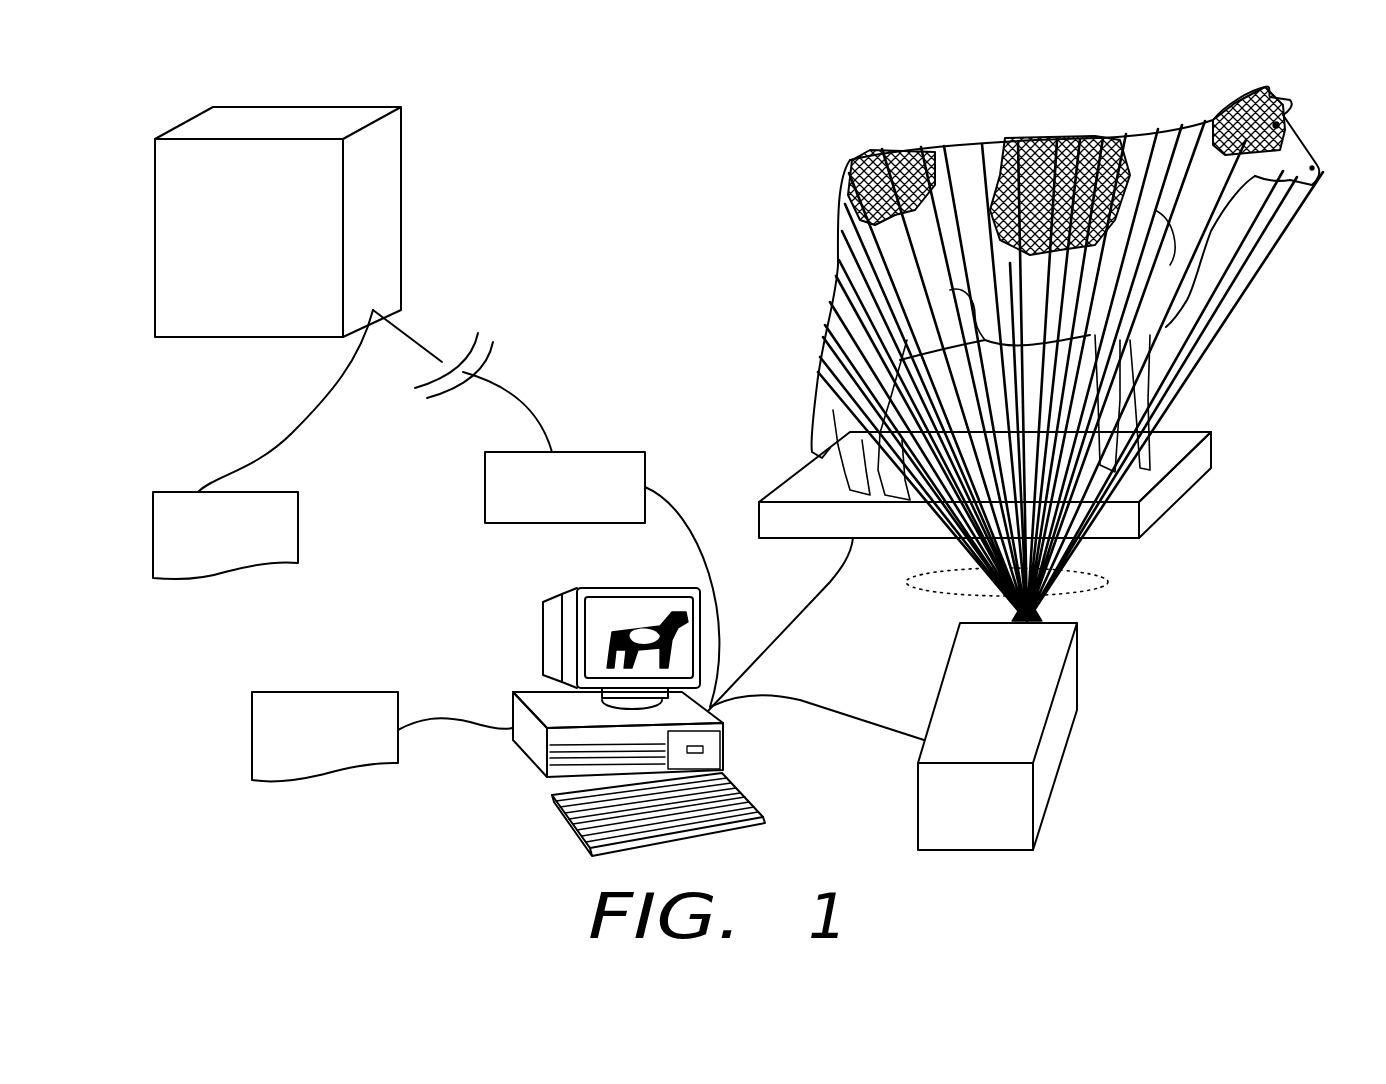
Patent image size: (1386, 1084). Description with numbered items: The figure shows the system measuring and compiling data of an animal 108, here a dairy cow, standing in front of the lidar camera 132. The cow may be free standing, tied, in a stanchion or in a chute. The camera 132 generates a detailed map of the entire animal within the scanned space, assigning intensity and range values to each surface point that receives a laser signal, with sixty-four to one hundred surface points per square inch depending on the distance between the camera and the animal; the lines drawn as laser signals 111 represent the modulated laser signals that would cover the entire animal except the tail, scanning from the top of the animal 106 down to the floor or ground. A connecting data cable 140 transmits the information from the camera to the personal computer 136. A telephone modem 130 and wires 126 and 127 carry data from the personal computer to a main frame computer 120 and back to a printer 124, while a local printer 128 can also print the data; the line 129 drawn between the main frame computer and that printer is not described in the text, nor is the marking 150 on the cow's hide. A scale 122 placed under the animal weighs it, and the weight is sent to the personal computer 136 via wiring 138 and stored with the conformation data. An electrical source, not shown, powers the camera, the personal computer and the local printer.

The top of the animal 106 is at (990, 126).
The animal 108 is at (1212, 110).
The laser signals 111 is at (1100, 590).
The main frame computer 120 is at (402, 202).
The scale 122 is at (1180, 424).
The printer 124 is at (299, 550).
The wires 126 is at (750, 598).
The wires 127 is at (410, 318).
The local printer 128 is at (268, 690).
The printer line 129 is at (291, 431).
The telephone modem 130 is at (607, 452).
The lidar camera 132 is at (1084, 668).
The personal computer 136 is at (530, 692).
The wiring 138 is at (832, 584).
The connecting data cable 140 is at (878, 684).
The hide marking 150 is at (1042, 238).